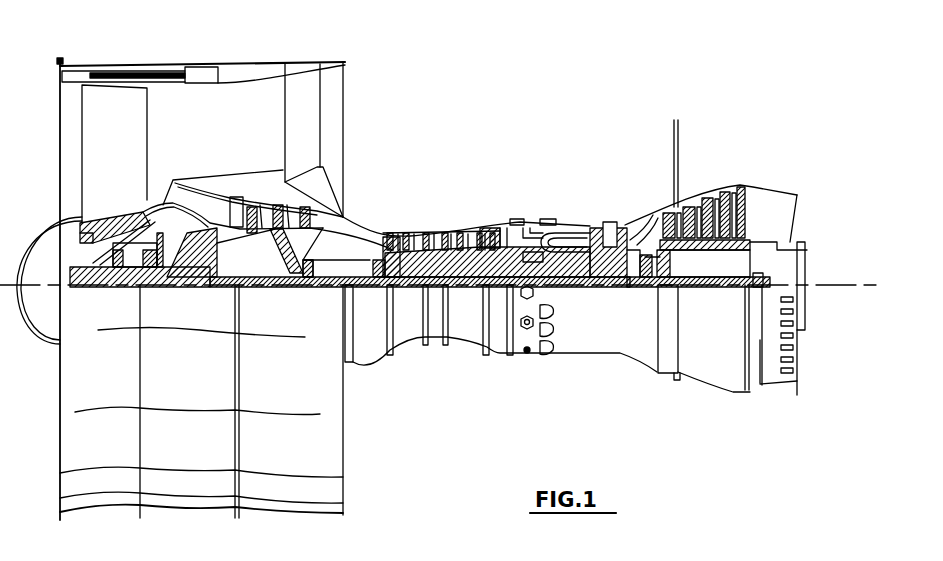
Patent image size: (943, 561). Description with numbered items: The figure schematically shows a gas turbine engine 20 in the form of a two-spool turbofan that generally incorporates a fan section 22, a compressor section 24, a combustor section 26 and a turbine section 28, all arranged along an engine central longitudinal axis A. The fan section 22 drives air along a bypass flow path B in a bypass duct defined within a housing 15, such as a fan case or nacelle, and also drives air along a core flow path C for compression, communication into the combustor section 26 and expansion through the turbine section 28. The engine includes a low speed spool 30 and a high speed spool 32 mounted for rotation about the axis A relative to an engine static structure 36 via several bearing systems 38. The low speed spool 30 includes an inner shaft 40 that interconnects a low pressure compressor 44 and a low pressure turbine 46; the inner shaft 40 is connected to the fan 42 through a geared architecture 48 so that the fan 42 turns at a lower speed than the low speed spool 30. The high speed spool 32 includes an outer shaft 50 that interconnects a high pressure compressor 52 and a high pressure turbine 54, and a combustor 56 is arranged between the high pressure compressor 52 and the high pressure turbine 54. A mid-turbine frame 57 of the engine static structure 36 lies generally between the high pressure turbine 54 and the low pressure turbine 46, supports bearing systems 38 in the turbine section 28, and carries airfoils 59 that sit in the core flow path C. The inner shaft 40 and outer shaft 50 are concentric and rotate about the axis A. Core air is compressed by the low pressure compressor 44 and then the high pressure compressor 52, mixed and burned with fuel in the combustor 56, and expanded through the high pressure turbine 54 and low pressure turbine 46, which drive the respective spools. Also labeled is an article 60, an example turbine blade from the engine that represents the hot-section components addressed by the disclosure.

The gas turbine engine 20 is at (563, 103).
The fan section 22 is at (147, 60).
The housing 15 is at (203, 70).
The fan 42 is at (130, 166).
The article 60 is at (310, 108).
The low pressure compressor 44 is at (305, 192).
The compressor section 24 is at (383, 211).
The high pressure compressor 52 is at (452, 230).
The high speed spool 32 is at (500, 231).
The combustor section 26 is at (560, 205).
The combustor 56 is at (563, 239).
The high pressure turbine 54 is at (653, 190).
The mid-turbine frame 57 is at (650, 207).
The turbine section 28 is at (686, 165).
The low pressure turbine 46 is at (708, 192).
The airfoils 59 is at (667, 257).
The outer shaft 50 is at (563, 282).
The bearing systems 38 is at (312, 283).
The geared architecture 48 is at (205, 283).
The inner shaft 40 is at (358, 292).
The low speed spool 30 is at (467, 289).
The engine static structure 36 is at (500, 356).
The engine central longitudinal axis A is at (867, 287).
The bypass flow path B is at (172, 125).
The core flow path C is at (193, 203).